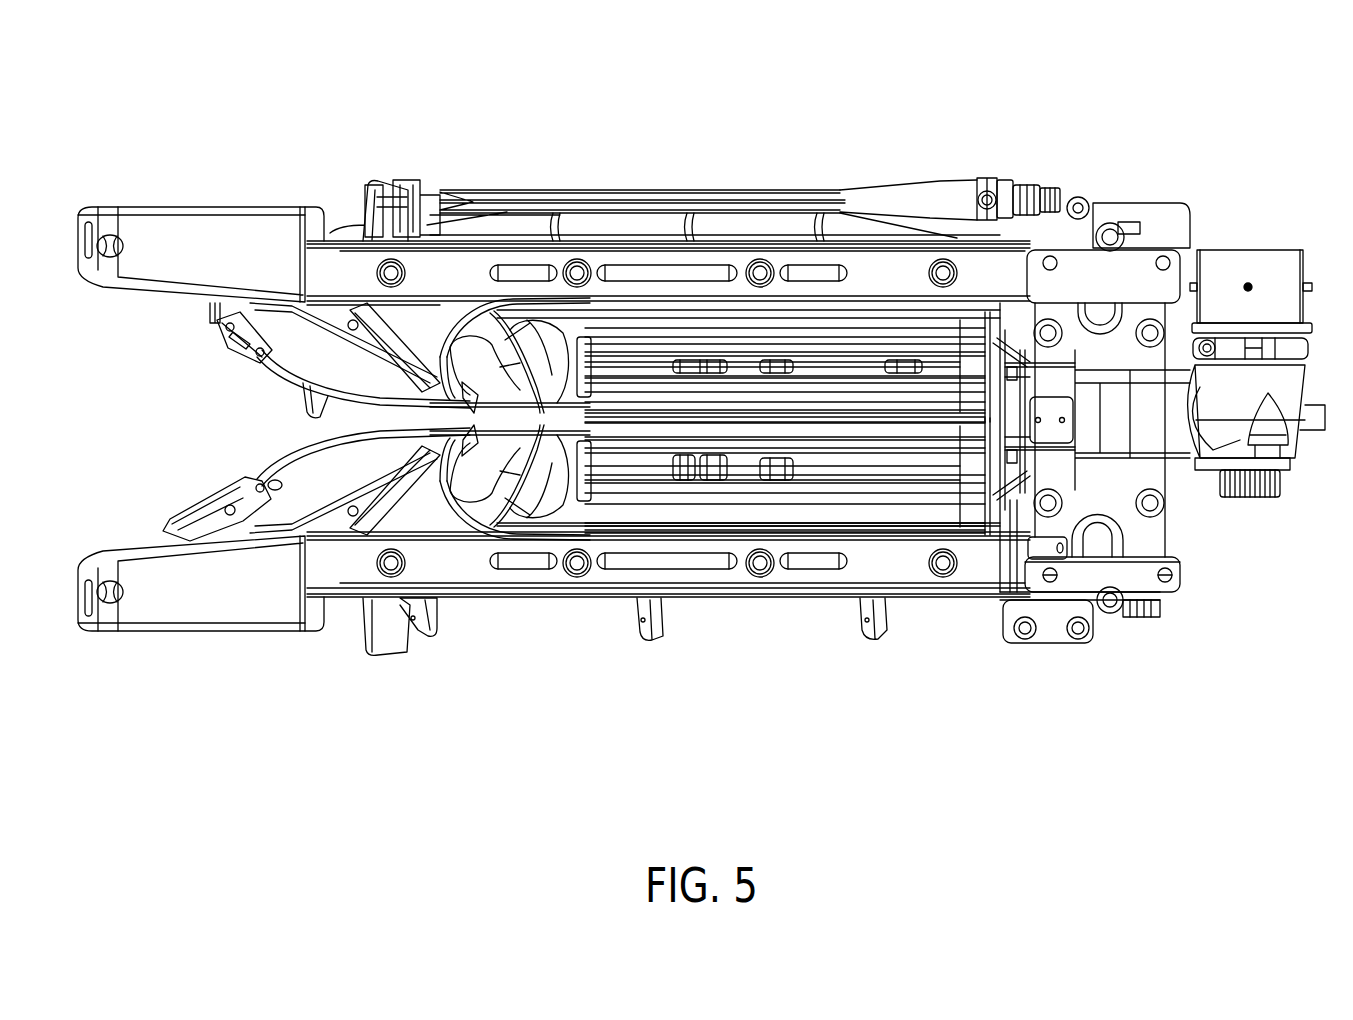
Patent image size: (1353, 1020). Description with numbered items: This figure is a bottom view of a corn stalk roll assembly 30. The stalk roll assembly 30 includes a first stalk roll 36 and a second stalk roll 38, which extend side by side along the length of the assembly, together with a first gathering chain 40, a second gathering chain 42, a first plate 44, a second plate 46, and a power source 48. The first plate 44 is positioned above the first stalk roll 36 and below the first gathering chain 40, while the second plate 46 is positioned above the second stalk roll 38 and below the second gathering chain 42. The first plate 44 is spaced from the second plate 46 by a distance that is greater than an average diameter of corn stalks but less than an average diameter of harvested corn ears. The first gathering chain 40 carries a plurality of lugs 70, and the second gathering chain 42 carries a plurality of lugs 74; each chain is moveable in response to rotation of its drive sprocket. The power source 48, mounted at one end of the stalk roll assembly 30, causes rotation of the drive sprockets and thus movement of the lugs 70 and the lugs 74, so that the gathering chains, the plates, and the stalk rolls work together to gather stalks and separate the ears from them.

The stalk roll assembly 30 is at (881, 83).
The first stalk roll 36 is at (622, 335).
The second stalk roll 38 is at (783, 480).
The first gathering chain 40 is at (215, 320).
The second gathering chain 42 is at (240, 487).
The first plate 44 is at (300, 350).
The second plate 46 is at (318, 470).
The power source 48 is at (1243, 262).
The lugs 70 is at (330, 408).
The lugs 74 is at (648, 640).